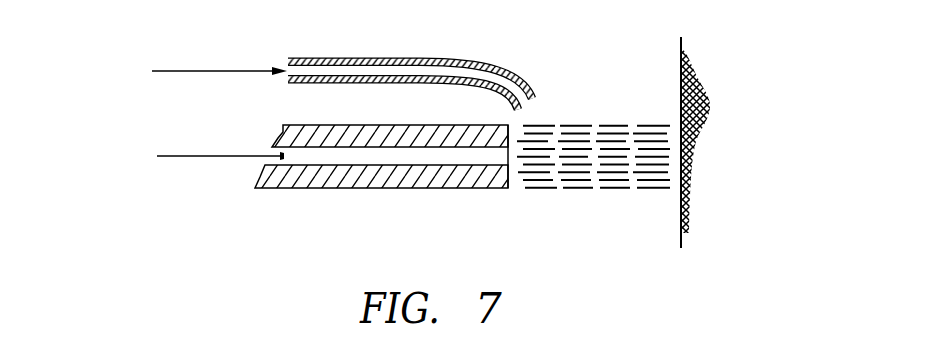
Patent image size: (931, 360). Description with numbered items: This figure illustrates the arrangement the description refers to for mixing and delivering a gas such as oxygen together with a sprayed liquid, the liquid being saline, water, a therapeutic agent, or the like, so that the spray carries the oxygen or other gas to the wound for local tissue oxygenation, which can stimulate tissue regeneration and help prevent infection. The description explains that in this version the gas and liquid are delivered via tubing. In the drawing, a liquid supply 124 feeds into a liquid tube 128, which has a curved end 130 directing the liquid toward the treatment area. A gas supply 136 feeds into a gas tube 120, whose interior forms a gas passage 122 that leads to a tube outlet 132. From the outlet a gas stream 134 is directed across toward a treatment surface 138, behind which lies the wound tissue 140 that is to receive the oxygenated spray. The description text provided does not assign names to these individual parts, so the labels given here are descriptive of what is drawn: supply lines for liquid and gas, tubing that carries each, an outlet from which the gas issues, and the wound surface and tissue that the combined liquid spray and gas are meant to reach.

The gas tube 120 is at (452, 176).
The gas passage 122 is at (380, 157).
The liquid supply 124 is at (195, 71).
The liquid tube 128 is at (340, 72).
The curved tube end 130 is at (488, 61).
The gas tube outlet 132 is at (509, 184).
The gas stream 134 is at (572, 128).
The gas supply 136 is at (198, 155).
The treatment surface 138 is at (680, 72).
The wound tissue 140 is at (703, 102).